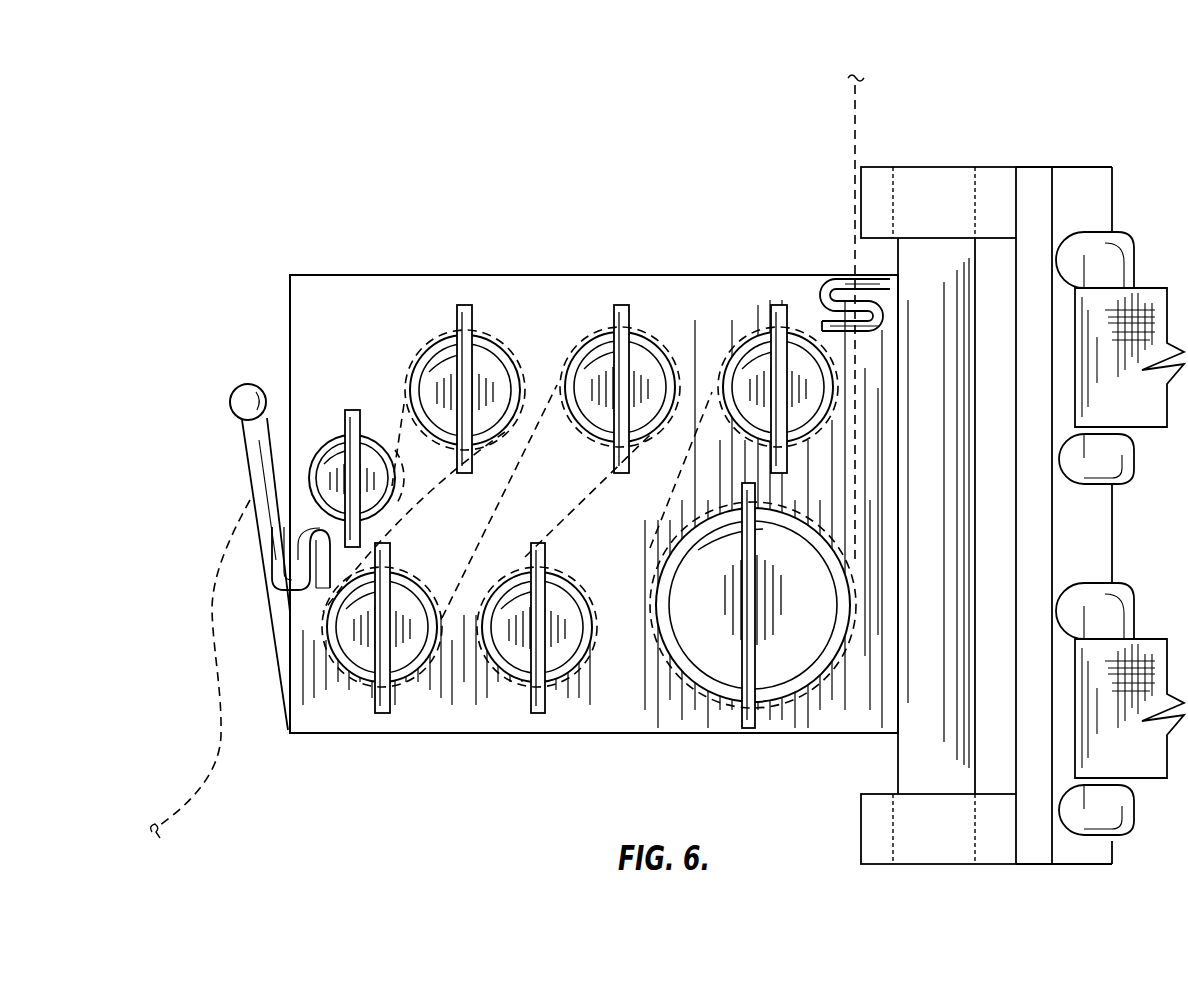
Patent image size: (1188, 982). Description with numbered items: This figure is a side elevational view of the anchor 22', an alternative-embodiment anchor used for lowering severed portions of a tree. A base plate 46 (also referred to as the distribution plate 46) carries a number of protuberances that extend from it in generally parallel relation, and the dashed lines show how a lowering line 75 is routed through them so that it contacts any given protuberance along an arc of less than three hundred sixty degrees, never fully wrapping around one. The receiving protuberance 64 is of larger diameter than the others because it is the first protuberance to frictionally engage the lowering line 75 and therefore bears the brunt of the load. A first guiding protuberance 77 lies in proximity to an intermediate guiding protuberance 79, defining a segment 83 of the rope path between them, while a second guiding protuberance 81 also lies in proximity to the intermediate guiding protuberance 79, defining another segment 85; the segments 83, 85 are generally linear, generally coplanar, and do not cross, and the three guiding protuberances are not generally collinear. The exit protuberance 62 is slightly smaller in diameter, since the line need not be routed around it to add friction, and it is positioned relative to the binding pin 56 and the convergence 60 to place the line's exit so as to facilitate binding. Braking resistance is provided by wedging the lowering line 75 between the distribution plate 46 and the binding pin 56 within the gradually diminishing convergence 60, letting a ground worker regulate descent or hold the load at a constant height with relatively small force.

The anchor 22' is at (583, 164).
The base plate 46 is at (420, 278).
The binding pin 56 is at (283, 471).
The convergence 60 is at (282, 470).
The exit protuberance 62 is at (332, 462).
The receiving protuberance 64 is at (705, 652).
The lowering line 75 is at (855, 137).
The first guiding protuberance 77 is at (507, 657).
The intermediate guiding protuberance 79 is at (592, 363).
The second guiding protuberance 81 is at (370, 650).
The segment 83 is at (610, 478).
The segment 85 is at (500, 512).